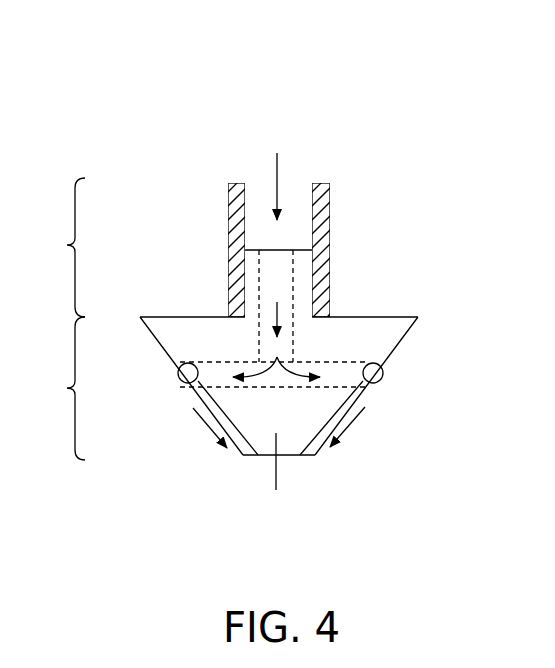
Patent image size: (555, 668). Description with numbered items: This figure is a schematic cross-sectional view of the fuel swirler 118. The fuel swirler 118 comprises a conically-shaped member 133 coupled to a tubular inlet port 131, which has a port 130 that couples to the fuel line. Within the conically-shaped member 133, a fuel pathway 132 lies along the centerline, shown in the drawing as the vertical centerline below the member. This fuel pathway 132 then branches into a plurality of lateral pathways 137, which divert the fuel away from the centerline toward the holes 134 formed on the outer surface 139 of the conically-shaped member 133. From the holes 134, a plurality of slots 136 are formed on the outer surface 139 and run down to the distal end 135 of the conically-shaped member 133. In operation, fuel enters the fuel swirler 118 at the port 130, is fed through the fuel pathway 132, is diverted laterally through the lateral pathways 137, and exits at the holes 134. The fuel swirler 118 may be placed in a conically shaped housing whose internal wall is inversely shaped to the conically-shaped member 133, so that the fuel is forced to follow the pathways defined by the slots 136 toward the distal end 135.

The fuel swirler 118 is at (456, 52).
The port 130 is at (294, 177).
The tubular inlet port 131 is at (180, 253).
The fuel pathway 132 is at (293, 270).
The conically-shaped member 133 is at (53, 388).
The holes 134 is at (383, 379).
The distal end 135 is at (283, 457).
The slots 136 is at (318, 452).
The lateral pathways 137 is at (322, 361).
The outer surface 139 is at (403, 333).